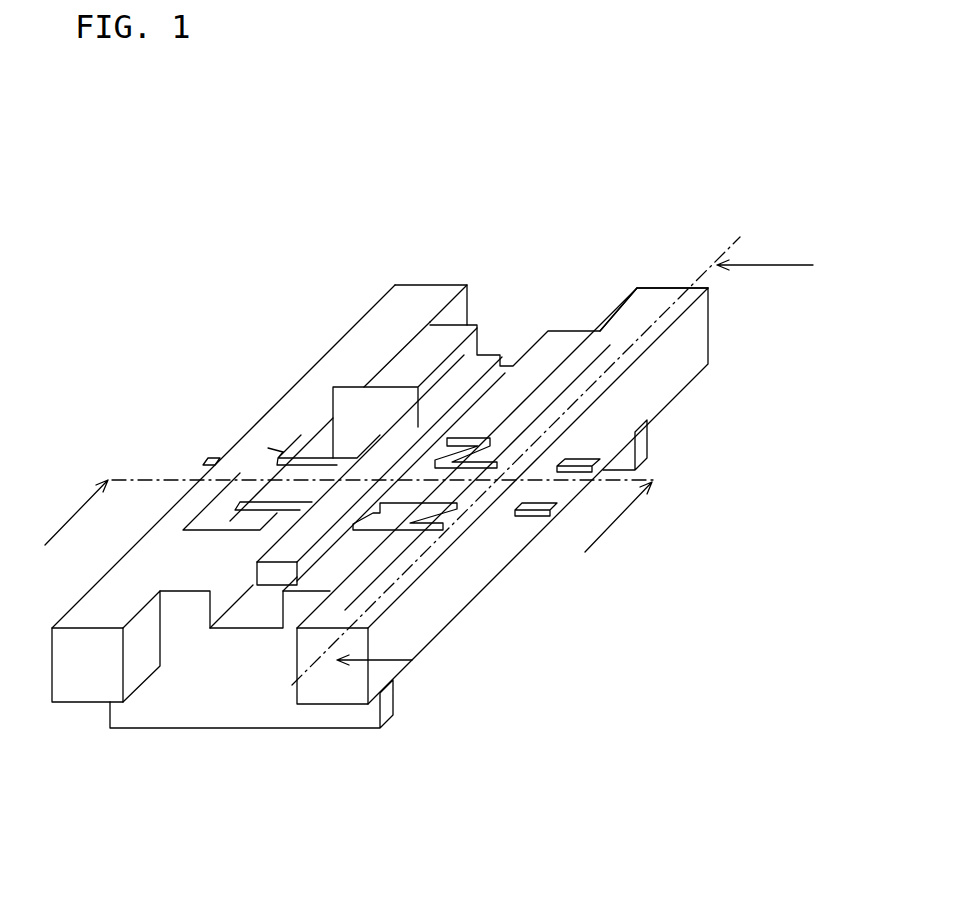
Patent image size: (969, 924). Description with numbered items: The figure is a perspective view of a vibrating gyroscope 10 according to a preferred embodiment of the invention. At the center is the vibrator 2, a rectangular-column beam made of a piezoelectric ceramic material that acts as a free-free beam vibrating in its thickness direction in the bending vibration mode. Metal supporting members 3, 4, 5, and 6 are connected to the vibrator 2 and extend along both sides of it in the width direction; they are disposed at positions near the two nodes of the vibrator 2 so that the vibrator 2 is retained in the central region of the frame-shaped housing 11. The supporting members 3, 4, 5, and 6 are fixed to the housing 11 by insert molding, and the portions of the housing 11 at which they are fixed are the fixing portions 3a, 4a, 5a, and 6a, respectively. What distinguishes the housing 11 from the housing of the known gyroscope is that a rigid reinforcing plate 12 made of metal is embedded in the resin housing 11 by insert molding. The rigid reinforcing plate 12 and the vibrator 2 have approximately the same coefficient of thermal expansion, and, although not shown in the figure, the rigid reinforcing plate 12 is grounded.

The vibrator 2 is at (410, 430).
The supporting member 3 is at (312, 458).
The fixing portion 3a is at (268, 442).
The supporting member 4 is at (567, 441).
The fixing portion 4a is at (603, 449).
The supporting member 5 is at (263, 502).
The fixing portion 5a is at (222, 492).
The supporting member 6 is at (428, 510).
The fixing portion 6a is at (519, 523).
The vibrating gyroscope 10 is at (152, 252).
The housing 11 is at (662, 303).
The rigid reinforcing plate 12 is at (247, 703).